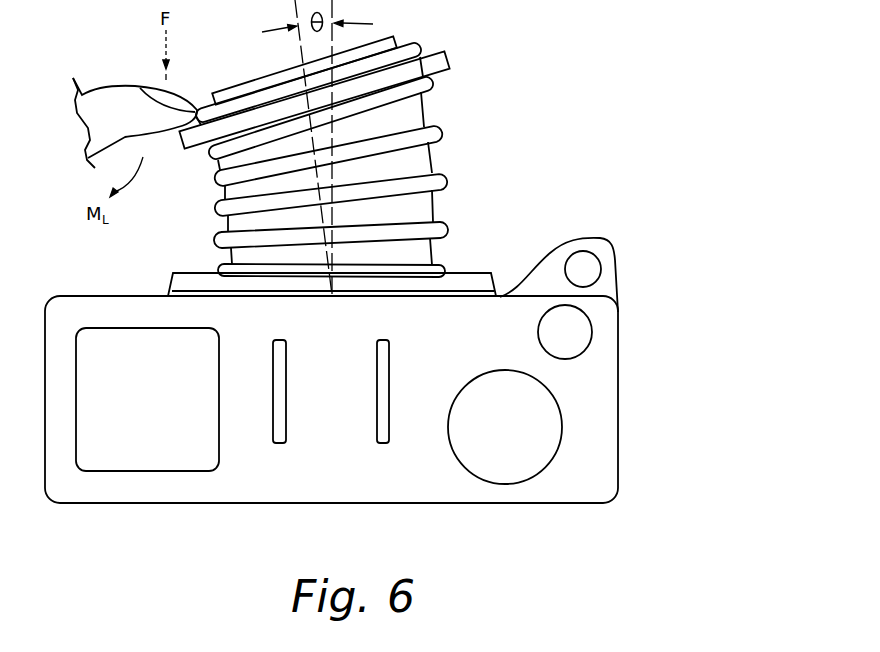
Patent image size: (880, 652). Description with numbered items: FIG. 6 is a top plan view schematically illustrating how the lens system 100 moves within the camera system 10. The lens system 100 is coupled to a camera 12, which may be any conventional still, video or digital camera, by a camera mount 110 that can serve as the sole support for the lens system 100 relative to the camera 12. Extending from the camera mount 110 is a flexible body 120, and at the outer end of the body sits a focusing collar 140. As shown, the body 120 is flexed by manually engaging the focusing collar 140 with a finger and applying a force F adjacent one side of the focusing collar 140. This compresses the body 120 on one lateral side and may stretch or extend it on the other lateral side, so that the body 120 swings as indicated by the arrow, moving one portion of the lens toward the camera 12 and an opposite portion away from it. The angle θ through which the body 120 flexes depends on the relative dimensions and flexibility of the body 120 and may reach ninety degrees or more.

The camera system 10 is at (381, 254).
The camera 12 is at (622, 313).
The lens system 100 is at (419, 151).
The camera mount 110 is at (477, 265).
The flexible body 120 is at (417, 163).
The focusing collar 140 is at (450, 56).